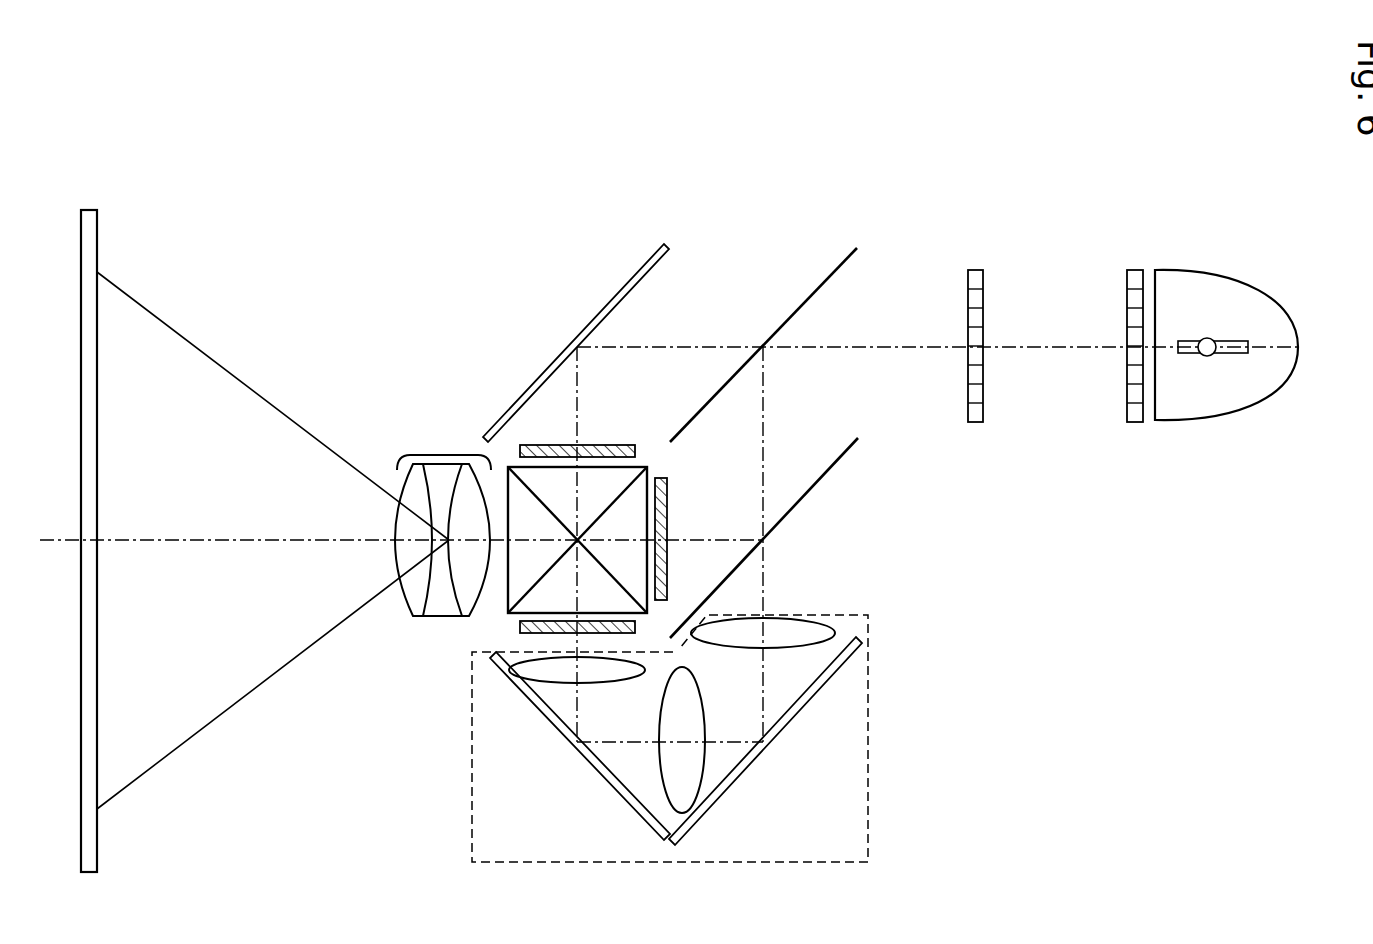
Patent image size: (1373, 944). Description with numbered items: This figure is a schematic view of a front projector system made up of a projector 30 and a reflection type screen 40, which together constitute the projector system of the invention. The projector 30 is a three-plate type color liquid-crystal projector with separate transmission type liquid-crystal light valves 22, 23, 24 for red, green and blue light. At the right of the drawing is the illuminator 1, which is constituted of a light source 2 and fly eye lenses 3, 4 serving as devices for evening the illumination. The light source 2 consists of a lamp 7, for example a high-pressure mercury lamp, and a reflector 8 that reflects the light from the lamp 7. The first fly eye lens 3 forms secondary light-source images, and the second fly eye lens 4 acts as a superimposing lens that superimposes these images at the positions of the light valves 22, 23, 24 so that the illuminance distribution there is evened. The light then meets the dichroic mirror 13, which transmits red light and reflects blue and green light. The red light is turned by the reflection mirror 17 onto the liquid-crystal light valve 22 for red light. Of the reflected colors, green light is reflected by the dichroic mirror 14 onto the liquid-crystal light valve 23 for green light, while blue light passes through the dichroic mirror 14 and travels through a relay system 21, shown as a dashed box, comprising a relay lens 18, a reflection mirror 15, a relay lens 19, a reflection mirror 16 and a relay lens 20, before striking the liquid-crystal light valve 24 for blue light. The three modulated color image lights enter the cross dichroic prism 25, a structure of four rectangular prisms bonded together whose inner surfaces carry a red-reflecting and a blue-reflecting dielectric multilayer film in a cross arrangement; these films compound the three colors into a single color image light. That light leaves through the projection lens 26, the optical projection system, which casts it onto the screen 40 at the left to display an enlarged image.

The illuminator 1 is at (1047, 156).
The light source 2 is at (1210, 256).
The first fly eye lens 3 is at (1137, 270).
The second fly eye lens 4 is at (975, 270).
The lamp 7 is at (1204, 357).
The reflector 8 is at (1262, 396).
The dichroic mirror 13 is at (810, 295).
The dichroic mirror 14 is at (851, 447).
The reflection mirror 15 is at (815, 700).
The reflection mirror 16 is at (618, 796).
The reflection mirror 17 is at (602, 306).
The relay lens 18 is at (825, 632).
The relay lens 19 is at (693, 760).
The relay lens 20 is at (530, 668).
The relay system 21 is at (868, 778).
The liquid-crystal light valve 22 is at (636, 449).
The liquid-crystal light valve 23 is at (661, 478).
The liquid-crystal light valve 24 is at (518, 627).
The cross dichroic prism 25 is at (525, 575).
The projection lens 26 is at (437, 455).
The projector 30 is at (697, 158).
The screen 40 is at (97, 760).